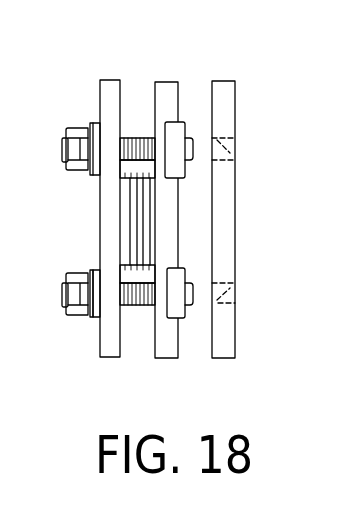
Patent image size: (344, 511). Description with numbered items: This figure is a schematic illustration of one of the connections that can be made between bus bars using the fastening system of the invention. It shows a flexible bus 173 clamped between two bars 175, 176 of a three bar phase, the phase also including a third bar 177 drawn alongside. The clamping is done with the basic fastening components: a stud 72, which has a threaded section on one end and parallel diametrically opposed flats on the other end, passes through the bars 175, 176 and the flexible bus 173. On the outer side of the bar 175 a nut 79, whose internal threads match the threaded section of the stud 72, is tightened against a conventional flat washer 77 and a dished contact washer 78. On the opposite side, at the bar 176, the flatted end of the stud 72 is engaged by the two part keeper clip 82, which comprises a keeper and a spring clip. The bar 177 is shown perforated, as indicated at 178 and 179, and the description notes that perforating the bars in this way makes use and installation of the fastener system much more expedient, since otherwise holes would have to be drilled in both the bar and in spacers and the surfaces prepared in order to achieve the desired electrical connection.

The stud 72 is at (130, 139).
The flat washer 77 is at (98, 320).
The dished contact washer 78 is at (92, 319).
The nut 79 is at (77, 172).
The keeper clip 82 is at (177, 130).
The flexible bus 173 is at (138, 222).
The bar 175 is at (108, 200).
The bar 176 is at (163, 87).
The bar 177 is at (222, 200).
The perforation 178 is at (234, 150).
The perforation 179 is at (232, 300).